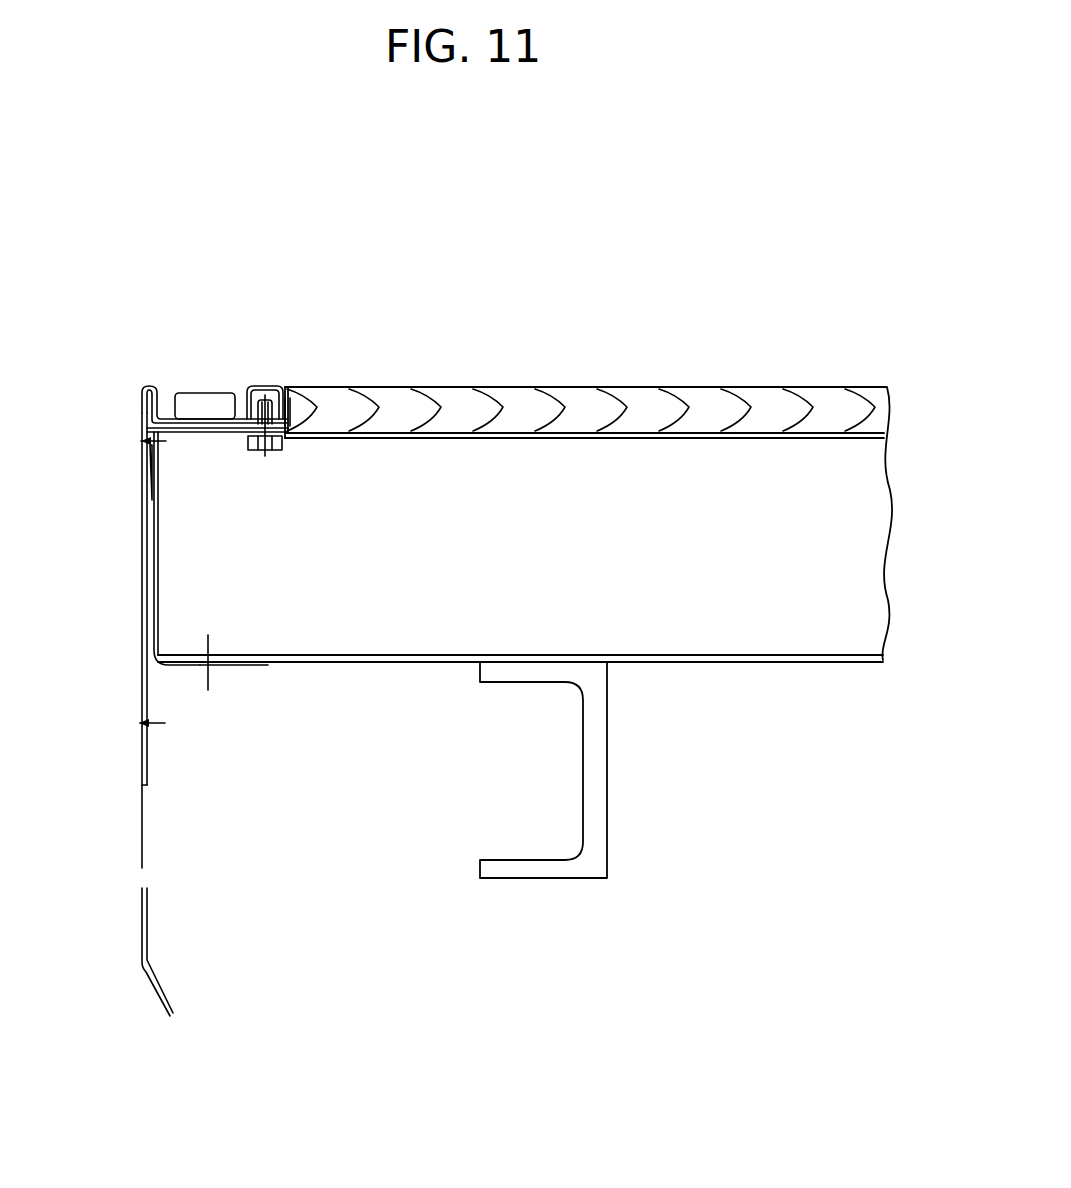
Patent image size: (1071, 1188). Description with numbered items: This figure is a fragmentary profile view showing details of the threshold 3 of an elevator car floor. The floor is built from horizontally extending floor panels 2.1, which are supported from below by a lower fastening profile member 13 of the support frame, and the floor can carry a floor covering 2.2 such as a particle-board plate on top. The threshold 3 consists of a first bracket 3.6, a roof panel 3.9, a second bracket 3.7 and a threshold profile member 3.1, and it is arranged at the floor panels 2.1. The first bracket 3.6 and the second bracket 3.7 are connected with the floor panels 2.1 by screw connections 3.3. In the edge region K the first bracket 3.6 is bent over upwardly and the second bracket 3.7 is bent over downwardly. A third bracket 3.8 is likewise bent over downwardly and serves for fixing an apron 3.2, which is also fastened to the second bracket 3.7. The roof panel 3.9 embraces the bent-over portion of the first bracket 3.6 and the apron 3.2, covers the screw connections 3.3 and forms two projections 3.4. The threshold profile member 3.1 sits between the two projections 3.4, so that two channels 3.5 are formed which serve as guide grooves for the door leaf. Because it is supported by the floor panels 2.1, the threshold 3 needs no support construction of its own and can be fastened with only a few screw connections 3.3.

The floor panel 2.1 is at (820, 622).
The floor covering 2.2 is at (765, 410).
The threshold 3 is at (131, 441).
The threshold profile member 3.1 is at (203, 390).
The apron 3.2 is at (140, 818).
The screw connection 3.3 is at (289, 402).
The projection 3.4 is at (153, 383).
The channel 3.5 is at (178, 390).
The first bracket 3.6 is at (150, 422).
The second bracket 3.7 is at (147, 497).
The third bracket 3.8 is at (245, 668).
The roof panel 3.9 is at (300, 412).
The lower fastening profile member 13 is at (592, 837).
The edge region K is at (130, 401).